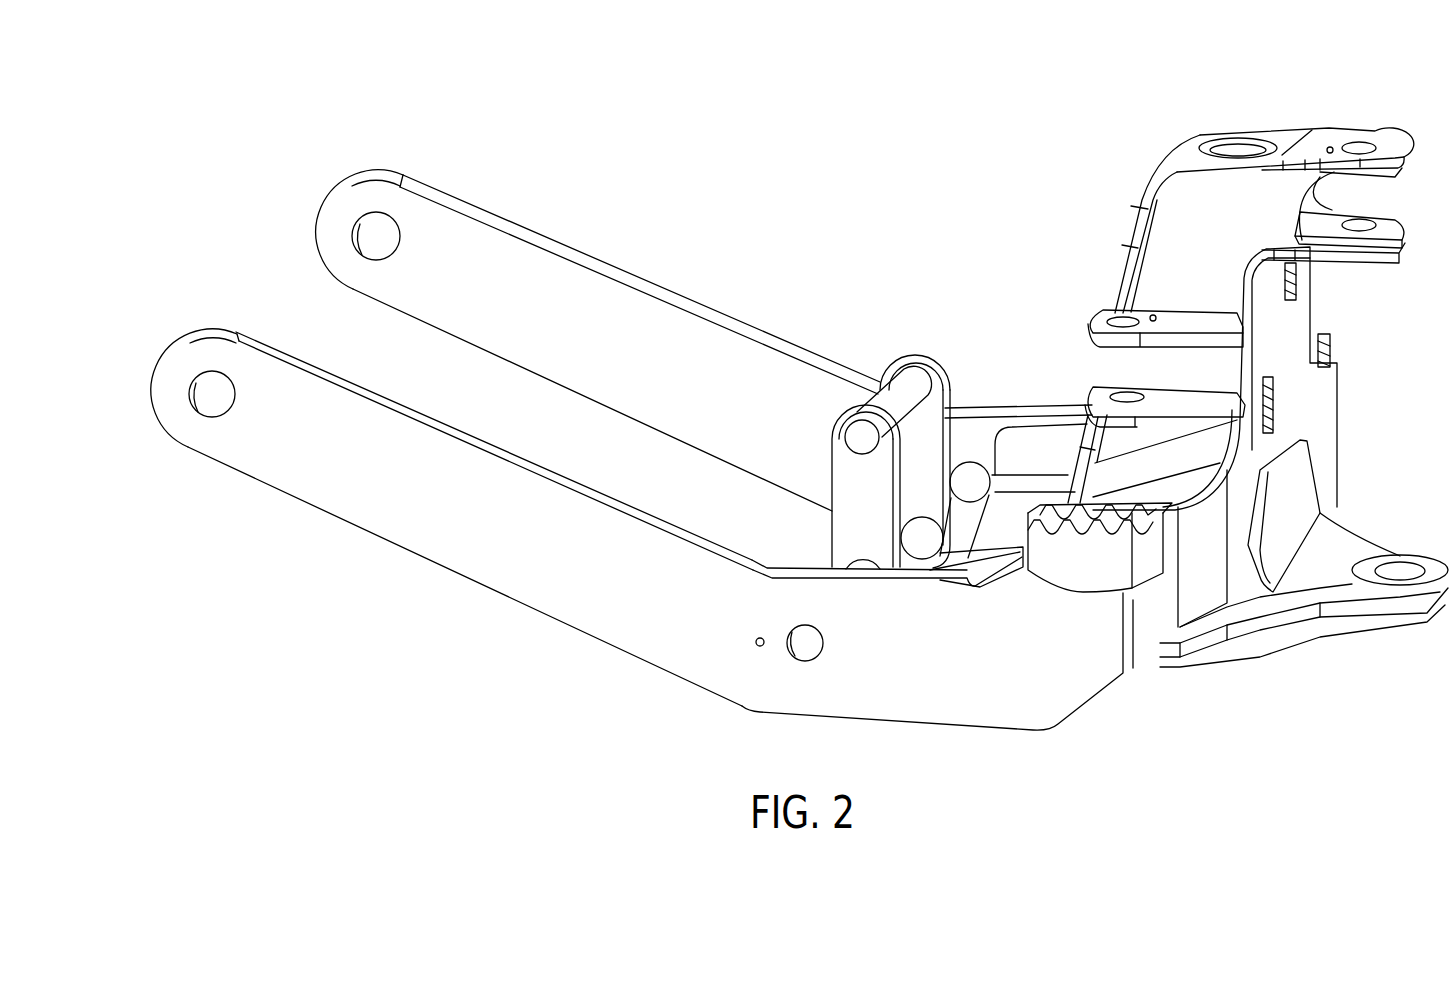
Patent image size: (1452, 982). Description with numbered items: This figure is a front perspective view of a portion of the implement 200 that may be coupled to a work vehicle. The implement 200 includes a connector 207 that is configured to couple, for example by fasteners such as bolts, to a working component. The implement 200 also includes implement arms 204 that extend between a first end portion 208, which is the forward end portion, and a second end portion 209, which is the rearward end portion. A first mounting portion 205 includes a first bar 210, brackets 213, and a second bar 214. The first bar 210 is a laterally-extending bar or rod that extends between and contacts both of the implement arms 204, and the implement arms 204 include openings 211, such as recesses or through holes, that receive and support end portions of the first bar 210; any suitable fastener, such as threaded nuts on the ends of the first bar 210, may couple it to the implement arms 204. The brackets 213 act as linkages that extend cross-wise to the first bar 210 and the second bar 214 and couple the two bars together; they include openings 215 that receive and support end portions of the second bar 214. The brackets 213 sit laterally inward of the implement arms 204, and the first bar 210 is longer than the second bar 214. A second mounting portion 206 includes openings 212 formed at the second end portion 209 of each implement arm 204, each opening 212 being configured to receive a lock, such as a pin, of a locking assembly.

The implement 200 is at (1256, 72).
The implement arms 204 is at (755, 333).
The first mounting portion 205 is at (914, 342).
The second mounting portion 206 is at (322, 169).
The connector 207 is at (1323, 405).
The first end portion 208 is at (1117, 718).
The second end portion 209 is at (149, 431).
The first bar 210 is at (917, 552).
The openings 211 is at (799, 657).
The openings 212 is at (374, 254).
The brackets 213 is at (935, 438).
The second bar 214 is at (900, 390).
The openings 215 is at (933, 368).